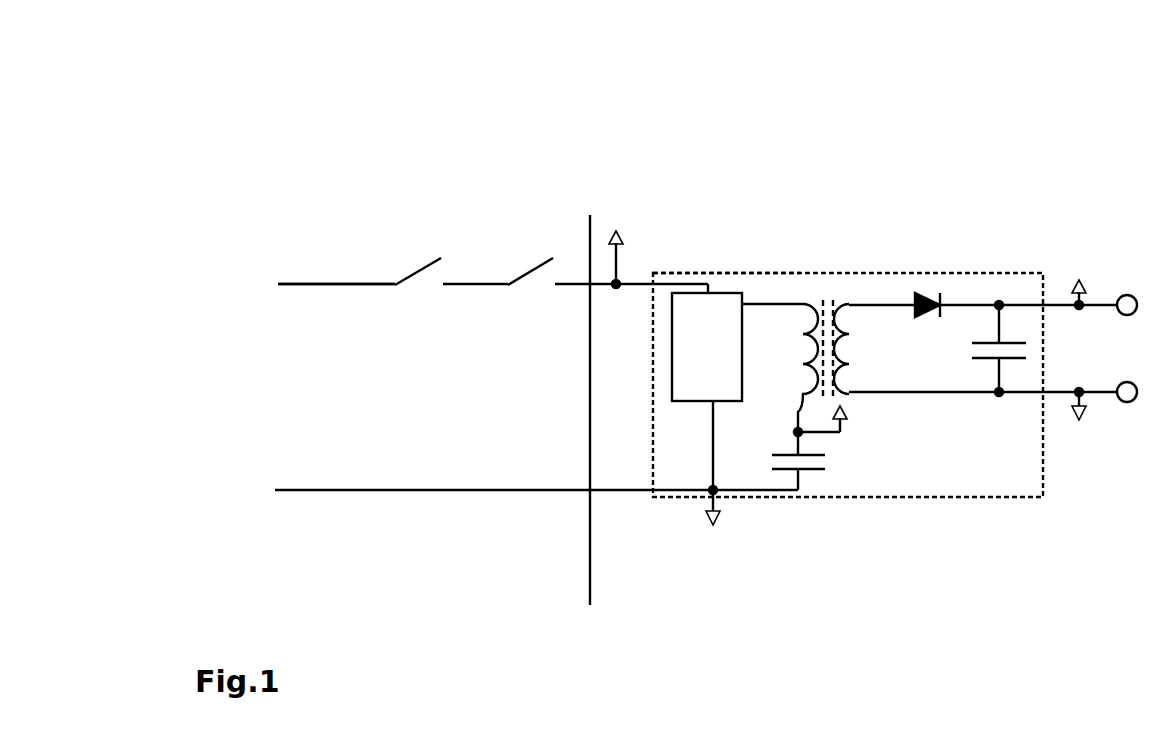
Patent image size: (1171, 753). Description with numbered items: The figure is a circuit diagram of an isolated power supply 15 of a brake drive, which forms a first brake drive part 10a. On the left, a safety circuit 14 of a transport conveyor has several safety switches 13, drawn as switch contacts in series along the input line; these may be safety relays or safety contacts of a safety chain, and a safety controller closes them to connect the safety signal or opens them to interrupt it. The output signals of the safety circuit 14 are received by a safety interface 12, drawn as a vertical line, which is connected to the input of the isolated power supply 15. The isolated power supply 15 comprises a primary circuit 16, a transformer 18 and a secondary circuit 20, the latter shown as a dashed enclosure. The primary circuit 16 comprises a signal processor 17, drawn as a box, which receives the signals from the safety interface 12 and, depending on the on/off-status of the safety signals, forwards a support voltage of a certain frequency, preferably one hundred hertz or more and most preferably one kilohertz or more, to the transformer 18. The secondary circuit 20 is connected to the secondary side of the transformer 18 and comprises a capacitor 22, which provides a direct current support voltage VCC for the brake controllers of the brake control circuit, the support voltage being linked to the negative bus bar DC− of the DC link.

The first brake drive part 10a is at (714, 103).
The safety interface 12 is at (576, 217).
The safety switches 13 is at (420, 262).
The safety circuit 14 is at (438, 315).
The isolated power supply 15 is at (743, 245).
The primary circuit 16 is at (821, 496).
The signal processor 17 is at (688, 348).
The transformer 18 is at (827, 300).
The secondary circuit 20 is at (869, 227).
The capacitor 22 is at (1010, 368).